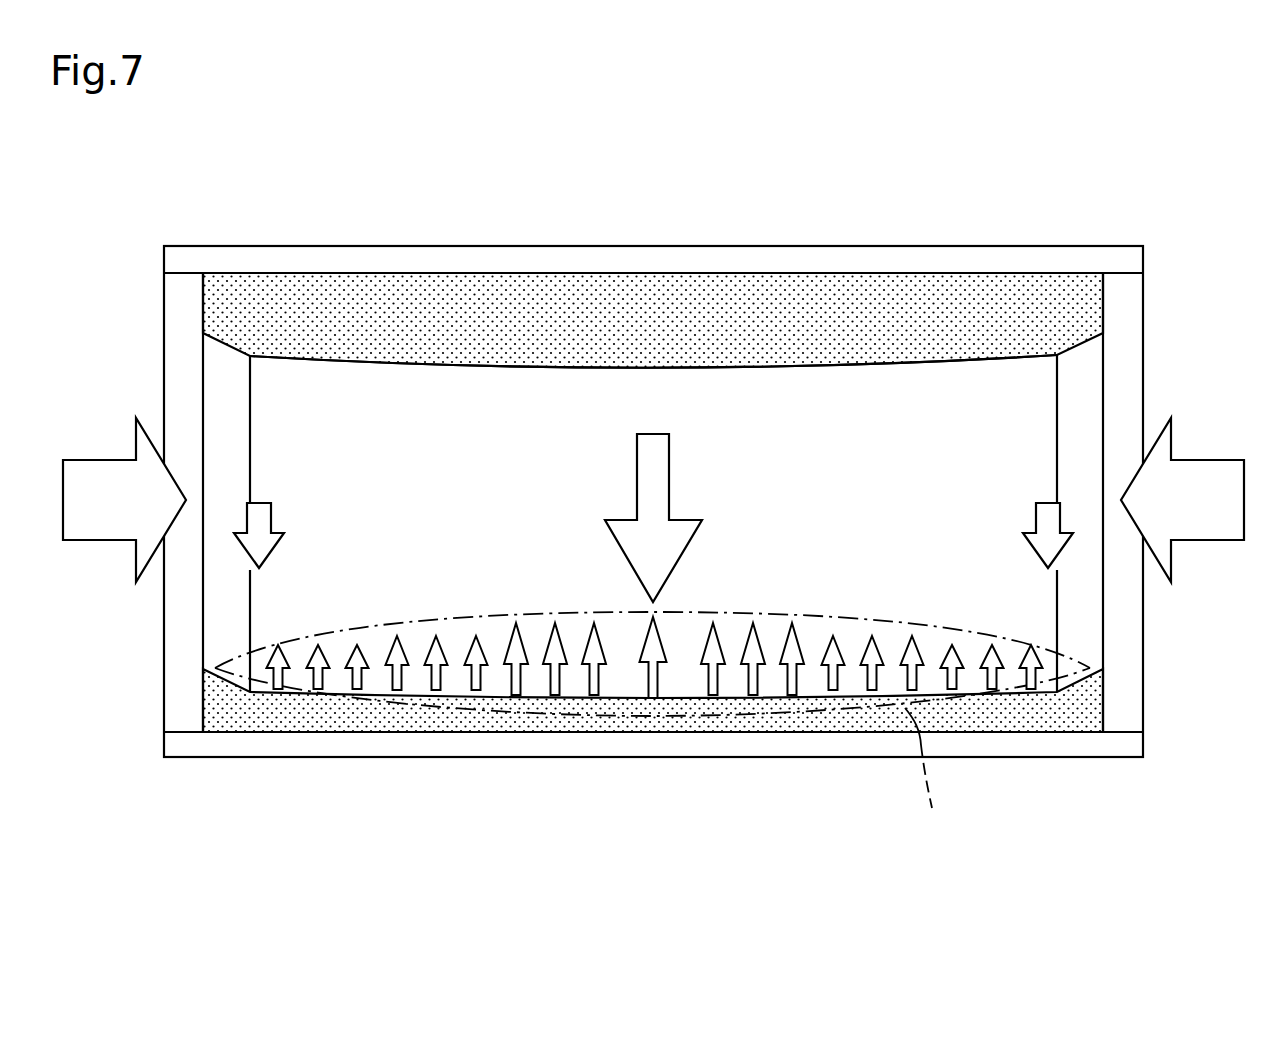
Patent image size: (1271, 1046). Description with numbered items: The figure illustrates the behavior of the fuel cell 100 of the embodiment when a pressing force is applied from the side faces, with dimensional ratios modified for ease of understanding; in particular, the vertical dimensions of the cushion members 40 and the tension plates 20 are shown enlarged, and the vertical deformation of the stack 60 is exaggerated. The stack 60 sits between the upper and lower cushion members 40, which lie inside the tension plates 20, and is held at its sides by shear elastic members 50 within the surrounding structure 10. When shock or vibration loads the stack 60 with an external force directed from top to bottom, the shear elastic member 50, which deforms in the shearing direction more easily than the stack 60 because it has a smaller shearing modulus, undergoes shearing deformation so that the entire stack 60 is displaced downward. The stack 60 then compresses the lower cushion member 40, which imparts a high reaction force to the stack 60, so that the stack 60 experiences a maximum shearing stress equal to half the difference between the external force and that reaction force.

The fuel cell 100 is at (653, 456).
The side wall member 10 is at (178, 652).
The tension plate 20 is at (1022, 258).
The cushion member 40 is at (897, 285).
The shear elastic member 50 is at (1085, 617).
The stack 60 is at (598, 383).